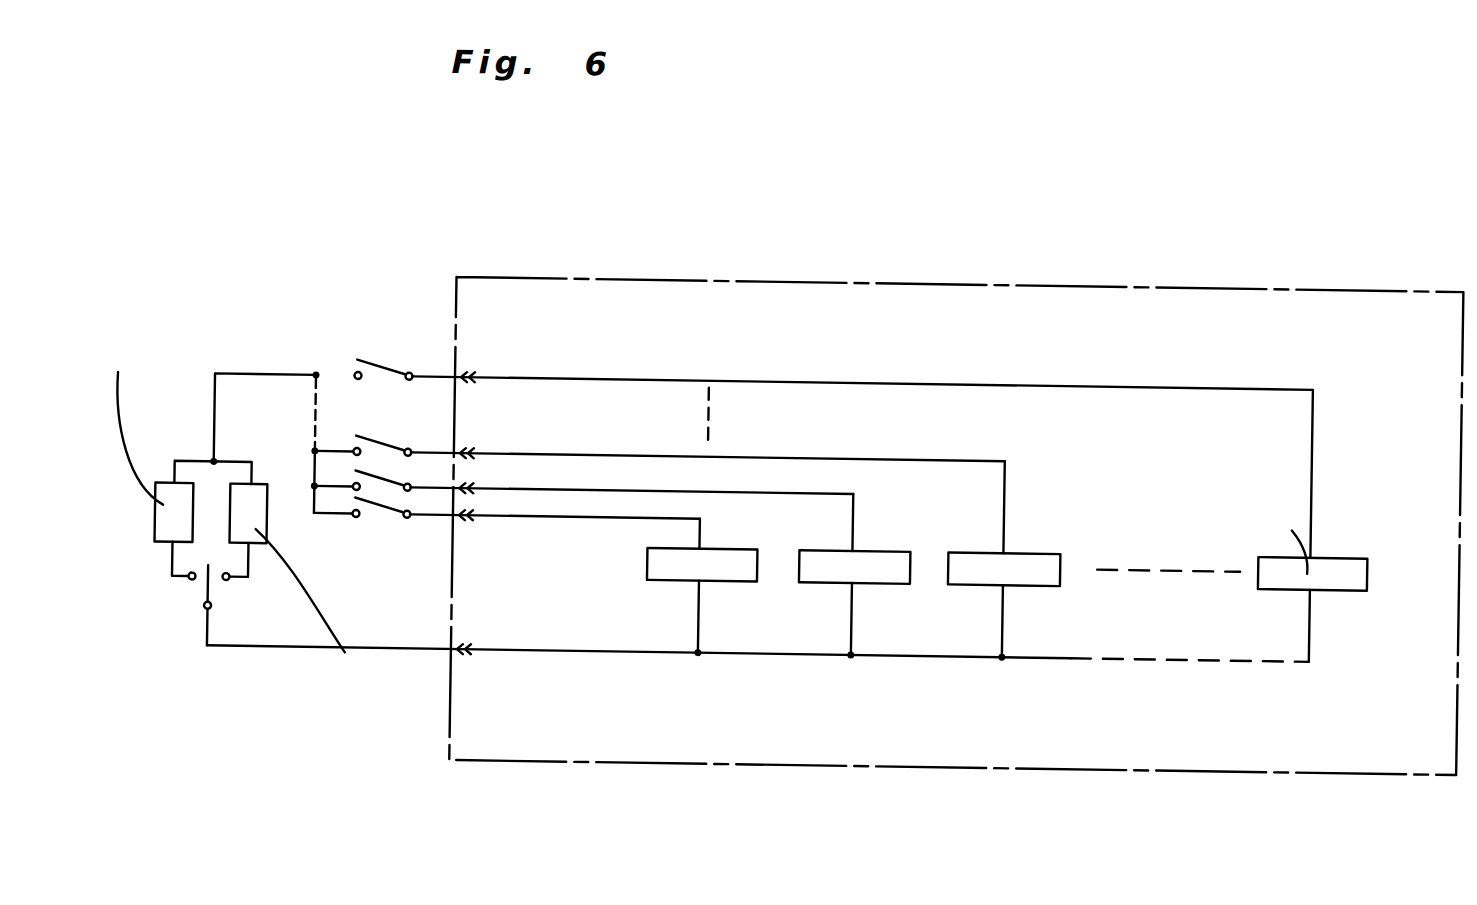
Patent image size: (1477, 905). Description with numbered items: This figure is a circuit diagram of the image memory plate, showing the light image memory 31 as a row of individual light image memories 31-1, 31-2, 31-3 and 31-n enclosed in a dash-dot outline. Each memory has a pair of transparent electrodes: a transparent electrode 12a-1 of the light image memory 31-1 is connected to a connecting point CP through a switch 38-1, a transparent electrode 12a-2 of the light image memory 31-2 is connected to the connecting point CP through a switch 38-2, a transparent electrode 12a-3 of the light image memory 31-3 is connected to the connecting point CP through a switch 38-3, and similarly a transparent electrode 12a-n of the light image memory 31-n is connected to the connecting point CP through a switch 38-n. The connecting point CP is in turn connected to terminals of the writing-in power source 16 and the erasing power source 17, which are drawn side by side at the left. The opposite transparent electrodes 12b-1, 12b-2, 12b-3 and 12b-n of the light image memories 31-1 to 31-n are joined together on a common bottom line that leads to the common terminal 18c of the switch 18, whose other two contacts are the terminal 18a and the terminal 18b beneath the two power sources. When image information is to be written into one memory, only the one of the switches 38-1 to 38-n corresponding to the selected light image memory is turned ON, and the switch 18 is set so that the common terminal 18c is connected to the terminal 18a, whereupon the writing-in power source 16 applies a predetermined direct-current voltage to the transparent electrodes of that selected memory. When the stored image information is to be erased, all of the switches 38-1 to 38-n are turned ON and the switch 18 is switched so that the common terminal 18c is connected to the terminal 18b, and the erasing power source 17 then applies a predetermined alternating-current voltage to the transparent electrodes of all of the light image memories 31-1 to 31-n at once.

The light image memory 31 is at (1105, 277).
The light image memory 31-1 is at (650, 578).
The light image memory 31-2 is at (804, 577).
The light image memory 31-3 is at (954, 575).
The light image memory 31-n is at (1353, 576).
The transparent electrode 12a-1 is at (704, 543).
The transparent electrode 12a-2 is at (856, 543).
The transparent electrode 12a-3 is at (1007, 541).
The transparent electrode 12a-n is at (1316, 544).
The transparent electrode 12b-1 is at (701, 580).
The transparent electrode 12b-2 is at (855, 577).
The transparent electrode 12b-3 is at (1006, 577).
The transparent electrode 12b-n is at (1312, 579).
The switch 38-1 is at (381, 507).
The switch 38-2 is at (371, 474).
The switch 38-3 is at (378, 443).
The switch 38-n is at (380, 362).
The connecting point CP is at (316, 375).
The writing-in power source 16 is at (160, 508).
The erasing power source 17 is at (270, 506).
The switch 18 is at (221, 638).
The terminal 18a is at (197, 581).
The terminal 18b is at (230, 583).
The common terminal 18c is at (214, 611).